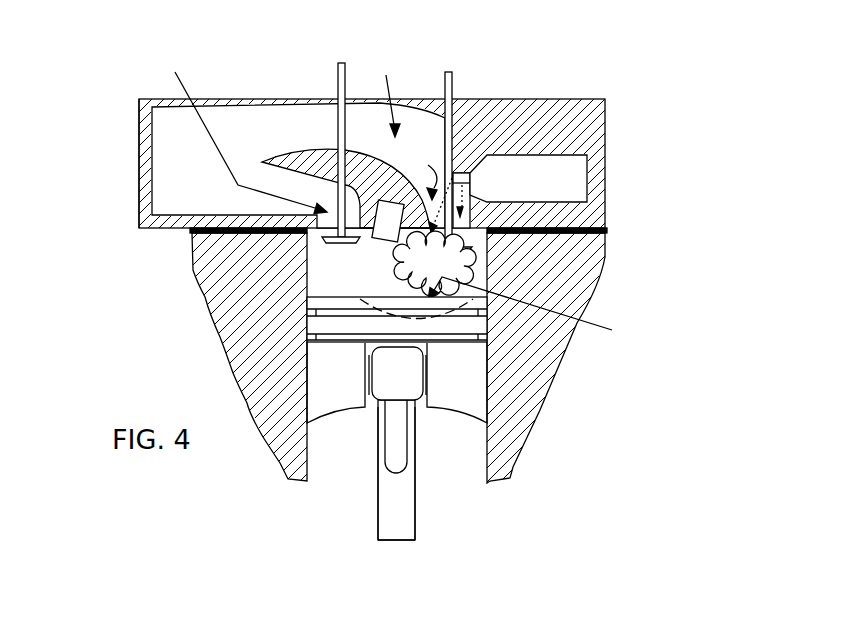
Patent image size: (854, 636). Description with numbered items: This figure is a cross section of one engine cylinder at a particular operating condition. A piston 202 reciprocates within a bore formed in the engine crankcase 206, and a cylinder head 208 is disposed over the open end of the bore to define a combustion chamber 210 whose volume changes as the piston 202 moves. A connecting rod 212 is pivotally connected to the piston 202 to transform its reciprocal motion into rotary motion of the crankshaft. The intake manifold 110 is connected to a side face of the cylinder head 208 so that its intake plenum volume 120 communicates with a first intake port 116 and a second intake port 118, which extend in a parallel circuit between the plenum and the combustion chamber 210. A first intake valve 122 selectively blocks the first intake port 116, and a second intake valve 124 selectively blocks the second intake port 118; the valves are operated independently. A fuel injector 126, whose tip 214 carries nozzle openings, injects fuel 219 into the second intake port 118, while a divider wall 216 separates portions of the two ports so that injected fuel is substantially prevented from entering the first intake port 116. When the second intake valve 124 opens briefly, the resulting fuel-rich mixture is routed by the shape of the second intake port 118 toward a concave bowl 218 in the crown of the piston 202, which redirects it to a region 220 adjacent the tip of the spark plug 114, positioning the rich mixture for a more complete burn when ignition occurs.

The intake manifold 110 is at (148, 200).
The spark plug 114 is at (392, 246).
The first intake port 116 is at (233, 134).
The second intake port 118 is at (384, 96).
The intake plenum volume 120 is at (162, 132).
The first intake valve 122 is at (337, 85).
The second intake valve 124 is at (448, 77).
The fuel injector 126 is at (523, 170).
The piston 202 is at (470, 403).
The engine crankcase 206 is at (552, 376).
The cylinder head 208 is at (600, 122).
The combustion chamber 210 is at (346, 293).
The connecting rod 212 is at (387, 490).
The tip 214 is at (458, 172).
The divider wall 216 is at (298, 160).
The bowl 218 is at (539, 310).
The fuel 219 is at (414, 174).
The region 220 is at (437, 263).